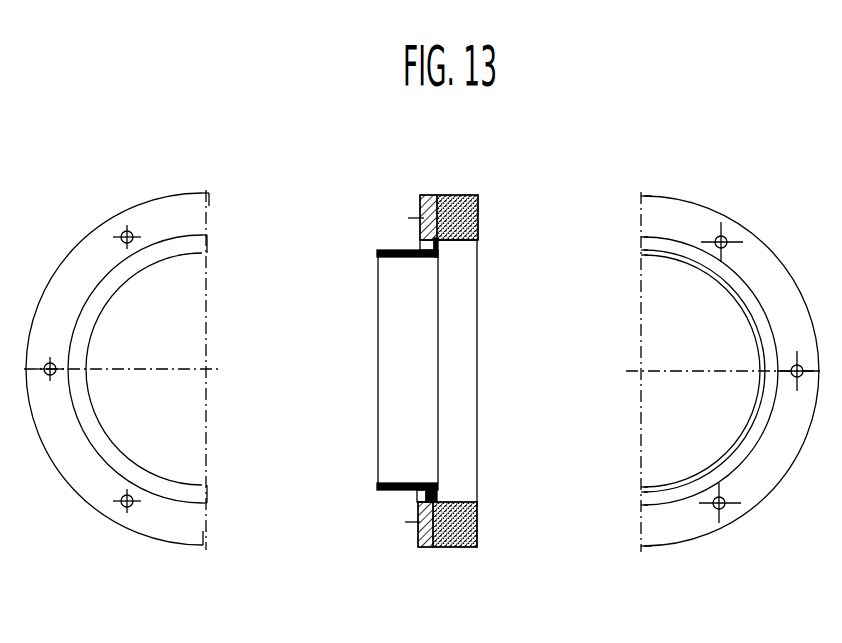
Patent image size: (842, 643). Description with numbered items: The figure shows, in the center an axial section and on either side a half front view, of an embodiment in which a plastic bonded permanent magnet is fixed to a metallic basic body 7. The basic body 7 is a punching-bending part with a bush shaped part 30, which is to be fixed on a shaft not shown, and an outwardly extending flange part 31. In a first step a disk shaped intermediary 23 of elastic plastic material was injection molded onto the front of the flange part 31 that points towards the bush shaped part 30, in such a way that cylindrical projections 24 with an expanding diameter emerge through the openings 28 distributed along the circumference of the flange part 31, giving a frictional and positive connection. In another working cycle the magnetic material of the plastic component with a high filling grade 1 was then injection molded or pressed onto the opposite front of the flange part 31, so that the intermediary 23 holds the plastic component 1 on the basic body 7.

The plastic component with a high filling grade 1 is at (157, 222).
The basic body 7 is at (143, 275).
The disk shaped intermediary 23 is at (419, 548).
The cylindrical projections 24 is at (120, 228).
The openings 28 is at (479, 233).
The bush shaped part 30 is at (380, 262).
The flange part 31 is at (442, 245).